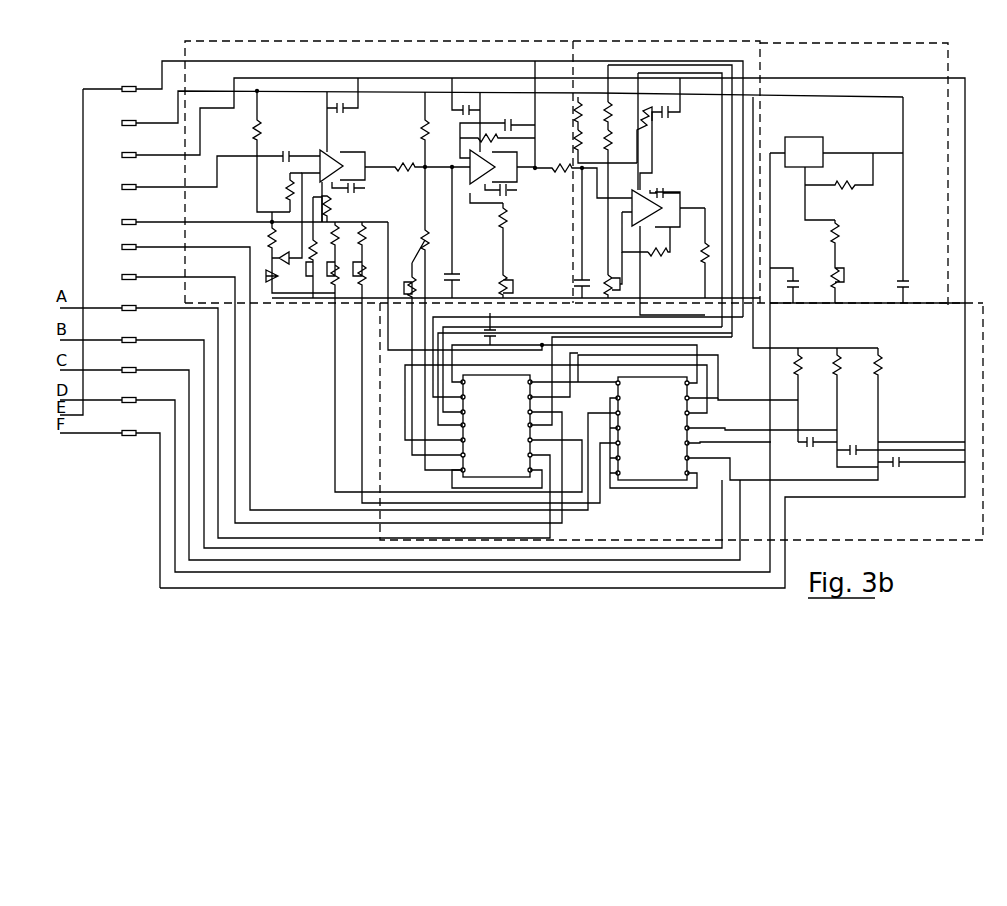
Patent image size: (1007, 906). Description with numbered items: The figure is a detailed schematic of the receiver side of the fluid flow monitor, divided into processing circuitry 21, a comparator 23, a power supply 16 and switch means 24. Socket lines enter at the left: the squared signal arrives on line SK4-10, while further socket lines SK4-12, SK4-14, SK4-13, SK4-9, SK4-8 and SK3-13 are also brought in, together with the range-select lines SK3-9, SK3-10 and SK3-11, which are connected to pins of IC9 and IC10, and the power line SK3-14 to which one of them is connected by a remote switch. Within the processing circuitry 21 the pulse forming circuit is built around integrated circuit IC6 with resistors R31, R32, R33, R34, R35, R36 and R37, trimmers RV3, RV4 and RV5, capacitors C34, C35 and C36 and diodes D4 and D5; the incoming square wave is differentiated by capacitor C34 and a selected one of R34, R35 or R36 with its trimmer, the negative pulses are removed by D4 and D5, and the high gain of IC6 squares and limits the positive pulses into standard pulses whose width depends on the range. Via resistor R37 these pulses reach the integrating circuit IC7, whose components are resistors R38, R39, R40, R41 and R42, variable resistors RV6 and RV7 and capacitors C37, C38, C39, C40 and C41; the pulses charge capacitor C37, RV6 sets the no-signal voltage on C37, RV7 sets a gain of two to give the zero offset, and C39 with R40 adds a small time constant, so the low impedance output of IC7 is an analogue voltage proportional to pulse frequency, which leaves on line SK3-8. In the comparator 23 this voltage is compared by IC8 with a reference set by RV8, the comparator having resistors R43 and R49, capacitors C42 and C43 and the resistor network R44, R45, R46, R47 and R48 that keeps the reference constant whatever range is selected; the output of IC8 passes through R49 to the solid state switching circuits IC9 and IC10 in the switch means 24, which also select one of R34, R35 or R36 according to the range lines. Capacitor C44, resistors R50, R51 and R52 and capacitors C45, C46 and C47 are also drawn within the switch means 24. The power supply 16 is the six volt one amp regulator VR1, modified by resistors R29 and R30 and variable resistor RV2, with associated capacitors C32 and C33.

The processing circuitry 21 is at (210, 57).
The comparator 23 is at (597, 57).
The power supply 16 is at (787, 57).
The switch means 24 is at (575, 537).
The line SK3-8 is at (401, 238).
The socket terminal SK4-12 is at (504, 108).
The socket terminal SK4-14 is at (535, 333).
The line SK4-10 is at (194, 173).
The socket terminal SK4-13 is at (246, 211).
The socket terminal SK4-9 is at (361, 367).
The socket terminal SK4-8 is at (333, 389).
The power line SK3-14 is at (305, 411).
The line SK3-11 is at (391, 432).
The line SK3-10 is at (400, 453).
The line SK3-9 is at (415, 362).
The socket terminal SK3-13 is at (111, 499).
The resistor R32 is at (254, 151).
The capacitor C34 is at (291, 149).
The resistor R31 is at (280, 192).
The resistor R33 is at (282, 252).
The diode D5 is at (296, 218).
The diode D4 is at (283, 275).
The variable resistor RV3 is at (313, 283).
The integrated circuit IC6 is at (336, 157).
The capacitor C35 is at (365, 194).
The capacitor C36 is at (342, 106).
The resistor R34 is at (335, 209).
The resistor R35 is at (343, 238).
The resistor R36 is at (370, 238).
The variable resistor RV4 is at (454, 372).
The variable resistor RV5 is at (485, 377).
The resistor R39 is at (409, 129).
The resistor R37 is at (417, 158).
The resistor R38 is at (428, 318).
The variable resistor RV6 is at (410, 295).
The capacitor C37 is at (462, 232).
The capacitor C41 is at (482, 96).
The integrated circuit IC7 is at (482, 132).
The capacitor C39 is at (528, 115).
The resistor R40 is at (511, 133).
The capacitor C38 is at (524, 188).
The resistor R42 is at (583, 173).
The resistor R41 is at (518, 238).
The variable resistor RV7 is at (518, 277).
The capacitor C40 is at (562, 233).
The resistor R45 is at (588, 113).
The resistor R44 is at (605, 146).
The resistor R47 is at (618, 116).
The resistor R46 is at (618, 202).
The resistor R48 is at (661, 148).
The capacitor C42 is at (680, 100).
The comparator IC8 is at (656, 240).
The capacitor C43 is at (675, 183).
The resistor R43 is at (656, 251).
The resistor R49 is at (705, 262).
The variable resistor RV8 is at (620, 275).
The voltage regulator VR1 is at (836, 141).
The resistor R29 is at (839, 186).
The resistor R30 is at (853, 242).
The variable resistor RV2 is at (853, 284).
The capacitor C33 is at (796, 281).
The capacitor C32 is at (915, 200).
The capacitor C44 is at (475, 329).
The integrated circuit IC9 is at (574, 402).
The integrated circuit IC10 is at (723, 432).
The resistor R52 is at (811, 395).
The resistor R51 is at (855, 407).
The resistor R50 is at (867, 414).
The capacitor C45 is at (817, 450).
The capacitor C46 is at (857, 458).
The capacitor C47 is at (921, 469).